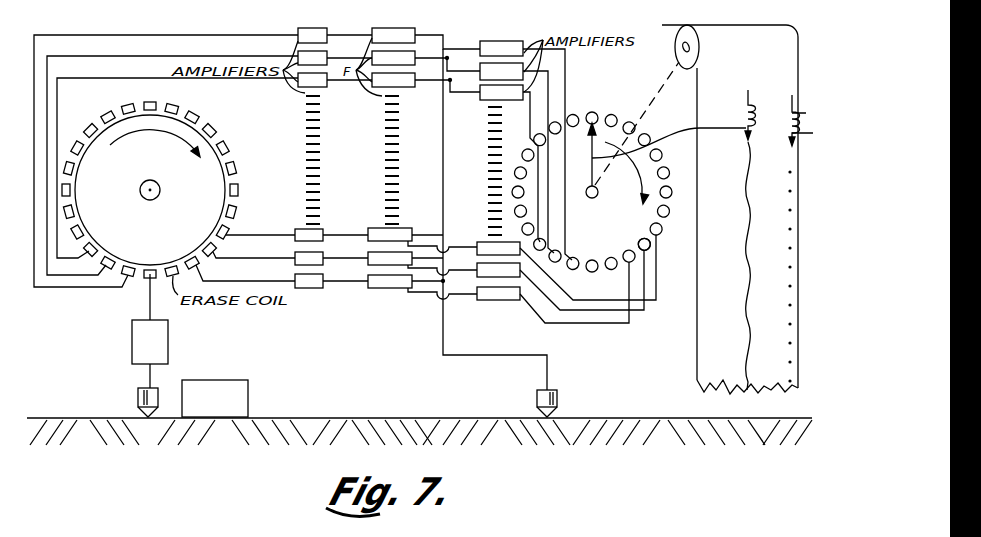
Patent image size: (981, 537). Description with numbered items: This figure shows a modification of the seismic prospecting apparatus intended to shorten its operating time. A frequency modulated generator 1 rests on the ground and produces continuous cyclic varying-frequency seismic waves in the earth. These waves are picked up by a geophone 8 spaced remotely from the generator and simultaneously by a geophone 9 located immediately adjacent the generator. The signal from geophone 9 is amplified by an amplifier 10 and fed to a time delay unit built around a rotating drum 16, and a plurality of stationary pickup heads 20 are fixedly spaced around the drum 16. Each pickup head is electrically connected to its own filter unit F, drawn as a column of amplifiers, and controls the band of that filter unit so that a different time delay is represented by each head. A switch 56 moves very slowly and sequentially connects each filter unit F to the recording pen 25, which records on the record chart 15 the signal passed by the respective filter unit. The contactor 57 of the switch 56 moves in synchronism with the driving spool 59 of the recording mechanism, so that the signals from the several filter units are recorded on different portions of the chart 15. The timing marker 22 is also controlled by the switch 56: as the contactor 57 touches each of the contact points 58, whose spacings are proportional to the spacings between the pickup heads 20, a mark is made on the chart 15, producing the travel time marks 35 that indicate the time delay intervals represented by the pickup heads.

The frequency modulated generator 1 is at (248, 385).
The geophone 8 is at (537, 398).
The geophone 9 is at (138, 397).
The amplifier 10 is at (132, 346).
The record chart 15 is at (697, 98).
The rotating drum 16 is at (229, 184).
The pickup heads 20 is at (216, 130).
The timing marker 22 is at (791, 103).
The recording pen 25 is at (745, 112).
The travel time marks 35 is at (792, 152).
The switch 56 is at (604, 291).
The contactor 57 is at (591, 177).
The contact points 58 is at (640, 239).
The driving spool 59 is at (675, 52).